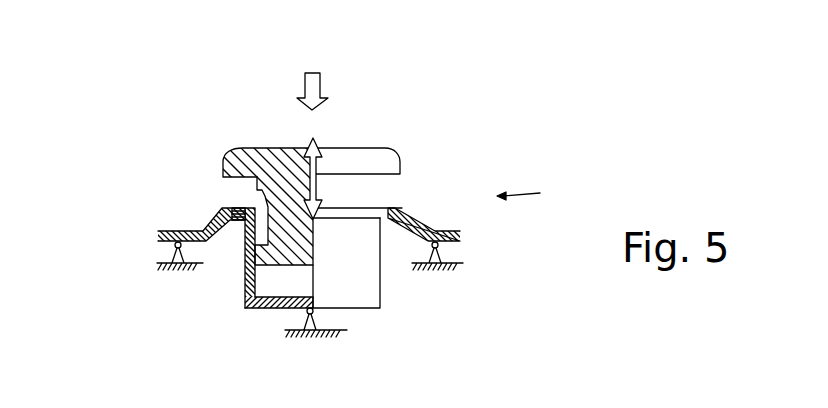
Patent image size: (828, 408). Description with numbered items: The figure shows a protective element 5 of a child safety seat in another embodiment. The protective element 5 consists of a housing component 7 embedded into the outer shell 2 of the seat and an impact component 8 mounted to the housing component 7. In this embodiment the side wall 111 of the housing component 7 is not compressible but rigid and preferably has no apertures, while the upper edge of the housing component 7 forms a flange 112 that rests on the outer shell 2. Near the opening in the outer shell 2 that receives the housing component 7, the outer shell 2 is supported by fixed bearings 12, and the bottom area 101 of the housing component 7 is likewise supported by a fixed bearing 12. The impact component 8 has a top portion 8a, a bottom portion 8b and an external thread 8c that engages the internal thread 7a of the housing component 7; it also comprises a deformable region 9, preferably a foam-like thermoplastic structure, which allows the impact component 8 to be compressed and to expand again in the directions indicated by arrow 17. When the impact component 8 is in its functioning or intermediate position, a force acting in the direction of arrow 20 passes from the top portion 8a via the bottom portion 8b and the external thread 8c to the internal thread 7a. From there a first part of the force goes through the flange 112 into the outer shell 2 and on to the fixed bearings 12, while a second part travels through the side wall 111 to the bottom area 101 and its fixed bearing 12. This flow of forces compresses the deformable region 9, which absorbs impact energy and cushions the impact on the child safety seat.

The protective element 5 is at (130, 130).
The outer shell 2 is at (418, 224).
The housing component 7 is at (243, 279).
The internal thread 7a is at (258, 210).
The impact component 8 is at (260, 148).
The top portion 8a is at (365, 160).
The bottom portion 8b is at (340, 195).
The external thread 8c is at (362, 206).
The deformable region 9 is at (528, 196).
The fixed bearing 12 is at (176, 268).
The arrow 17 is at (318, 138).
The arrow 20 is at (311, 86).
The bottom area 101 is at (265, 309).
The side wall 111 is at (243, 262).
The flange 112 is at (240, 208).